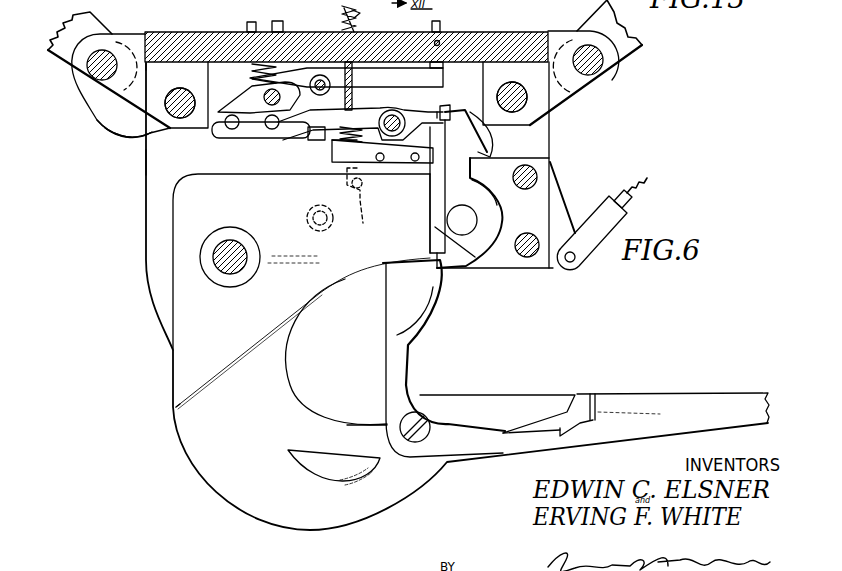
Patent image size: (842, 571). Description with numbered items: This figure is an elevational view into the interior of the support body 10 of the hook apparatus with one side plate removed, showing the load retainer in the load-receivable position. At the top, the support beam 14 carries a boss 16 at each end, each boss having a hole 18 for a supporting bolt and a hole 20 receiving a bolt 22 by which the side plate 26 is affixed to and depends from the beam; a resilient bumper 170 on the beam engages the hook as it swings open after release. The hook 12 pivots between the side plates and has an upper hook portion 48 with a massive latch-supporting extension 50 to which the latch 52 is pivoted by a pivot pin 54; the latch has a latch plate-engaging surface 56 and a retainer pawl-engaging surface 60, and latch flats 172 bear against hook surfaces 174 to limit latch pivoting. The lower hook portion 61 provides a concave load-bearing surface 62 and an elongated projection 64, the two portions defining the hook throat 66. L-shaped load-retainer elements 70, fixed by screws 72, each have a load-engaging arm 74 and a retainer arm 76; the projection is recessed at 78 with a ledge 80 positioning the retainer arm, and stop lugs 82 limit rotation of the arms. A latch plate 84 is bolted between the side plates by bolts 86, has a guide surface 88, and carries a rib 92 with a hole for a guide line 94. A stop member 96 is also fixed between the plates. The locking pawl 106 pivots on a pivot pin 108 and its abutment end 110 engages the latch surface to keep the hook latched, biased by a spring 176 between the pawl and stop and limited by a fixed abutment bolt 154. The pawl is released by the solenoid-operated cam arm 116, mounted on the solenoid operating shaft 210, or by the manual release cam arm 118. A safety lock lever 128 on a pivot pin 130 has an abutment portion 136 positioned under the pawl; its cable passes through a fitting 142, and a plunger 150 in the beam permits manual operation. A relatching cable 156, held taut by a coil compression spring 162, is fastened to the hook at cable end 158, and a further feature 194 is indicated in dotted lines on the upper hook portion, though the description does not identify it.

The support body 10 is at (108, 207).
The hook 12 is at (202, 498).
The support beam 14 is at (174, 36).
The boss 16 is at (133, 34).
The hole 18 is at (112, 80).
The hole 20 is at (180, 98).
The bolt 22 is at (185, 115).
The side plate 26 is at (146, 162).
The upper hook portion 48 is at (277, 204).
The latch-supporting extension 50 is at (418, 217).
The latch 52 is at (466, 140).
The pivot pin 54 is at (470, 228).
The latch plate-engaging surface 56 is at (480, 142).
The retainer pawl-engaging surface 60 is at (436, 154).
The lower hook portion 61 is at (240, 449).
The load-bearing surface 62 is at (346, 423).
The projection 64 is at (706, 400).
The hook throat 66 is at (346, 347).
The load-retainer element 70 is at (418, 330).
The screw 72 is at (430, 432).
The load-engaging arm 74 is at (442, 287).
The retainer arm 76 is at (535, 440).
The recess 78 is at (233, 272).
The ledge 80 is at (584, 440).
The stop lug 82 is at (330, 485).
The latch plate 84 is at (512, 157).
The bolt 86 is at (527, 234).
The guide surface 88 is at (491, 201).
The rib 92 is at (563, 217).
The guide line 94 is at (644, 186).
The stop member 96 is at (393, 163).
The locking pawl 106 is at (360, 118).
The pivot pin 108 is at (398, 116).
The abutment end 110 is at (447, 110).
The solenoid-operated cam arm 116 is at (250, 135).
The manual release cam arm 118 is at (233, 107).
The safety lock lever 128 is at (441, 83).
The pivot pin 130 is at (316, 76).
The abutment portion 136 is at (320, 142).
The fitting 142 is at (266, 25).
The plunger 150 is at (441, 26).
The abutment bolt 154 is at (341, 67).
The cable 156 is at (360, 14).
The cable end 158 is at (363, 222).
The coil compression spring 162 is at (340, 11).
The resilient bumper 170 is at (112, 122).
The latch flat 172 is at (470, 255).
The hook surface 174 is at (436, 224).
The spring 176 is at (357, 140).
The bore 194 is at (324, 228).
The operating shaft 210 is at (275, 132).